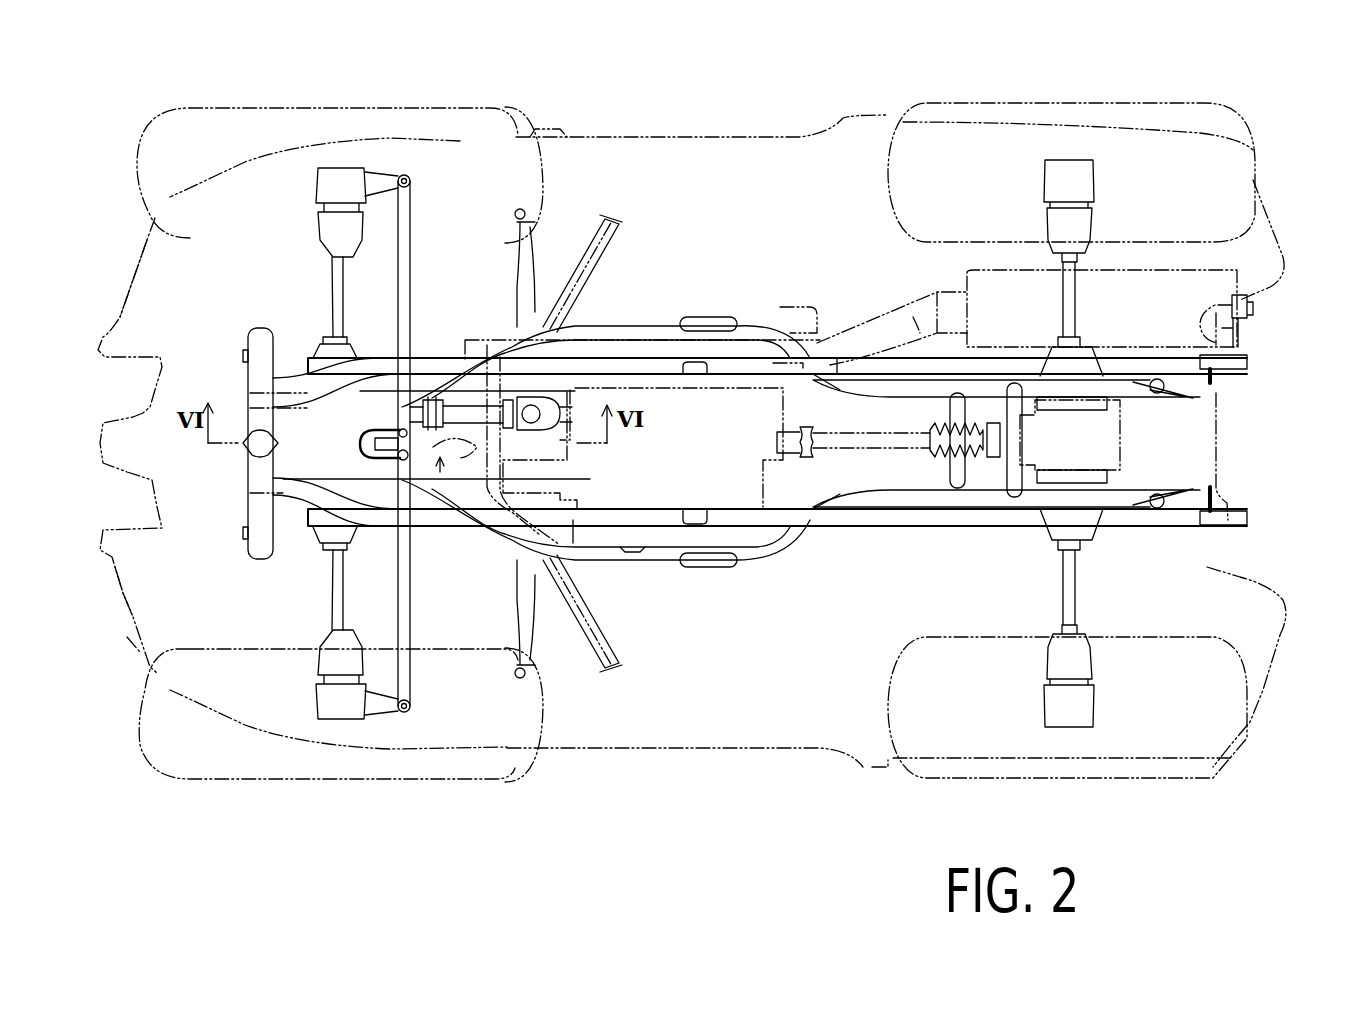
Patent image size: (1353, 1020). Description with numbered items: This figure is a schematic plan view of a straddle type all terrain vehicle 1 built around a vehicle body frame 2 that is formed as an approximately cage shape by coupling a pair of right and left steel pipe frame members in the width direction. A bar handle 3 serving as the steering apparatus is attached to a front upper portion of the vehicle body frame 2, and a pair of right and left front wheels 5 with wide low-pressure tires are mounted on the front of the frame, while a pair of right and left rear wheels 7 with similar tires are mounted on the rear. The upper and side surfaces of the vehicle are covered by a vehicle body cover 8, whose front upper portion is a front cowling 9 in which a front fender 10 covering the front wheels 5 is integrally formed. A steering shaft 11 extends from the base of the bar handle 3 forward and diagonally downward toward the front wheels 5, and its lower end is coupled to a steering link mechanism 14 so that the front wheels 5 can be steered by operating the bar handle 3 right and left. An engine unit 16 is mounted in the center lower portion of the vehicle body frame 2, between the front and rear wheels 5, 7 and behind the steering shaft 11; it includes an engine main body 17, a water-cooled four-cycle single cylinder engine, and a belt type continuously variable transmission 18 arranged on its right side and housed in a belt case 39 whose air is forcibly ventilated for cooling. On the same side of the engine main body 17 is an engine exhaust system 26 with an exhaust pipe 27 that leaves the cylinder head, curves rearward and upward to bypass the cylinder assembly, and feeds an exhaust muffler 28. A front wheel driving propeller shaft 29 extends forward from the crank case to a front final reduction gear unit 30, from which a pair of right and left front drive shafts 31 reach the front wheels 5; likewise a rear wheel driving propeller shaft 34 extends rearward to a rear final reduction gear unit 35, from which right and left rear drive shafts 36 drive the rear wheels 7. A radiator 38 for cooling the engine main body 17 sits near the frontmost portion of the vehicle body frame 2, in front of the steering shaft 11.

The all terrain vehicle 1 is at (706, 85).
The vehicle body frame 2 is at (866, 540).
The bar handle 3 is at (553, 325).
The front wheels 5 is at (135, 163).
The rear wheels 7 is at (980, 100).
The vehicle body cover 8 is at (115, 603).
The front cowling 9 is at (127, 637).
The front fender 10 is at (325, 165).
The steering shaft 11 is at (436, 530).
The steering link mechanism 14 is at (355, 458).
The engine unit 16 is at (633, 560).
The engine main body 17 is at (793, 545).
The belt type continuously variable transmission 18 is at (737, 320).
The engine exhaust system 26 is at (1250, 274).
The exhaust pipe 27 is at (427, 396).
The exhaust muffler 28 is at (1243, 330).
The front wheel driving propeller shaft 29 is at (448, 398).
The front final reduction gear unit 30 is at (148, 342).
The front drive shafts 31 is at (333, 285).
The rear wheel driving propeller shaft 34 is at (837, 358).
The rear final reduction gear unit 35 is at (1120, 441).
The rear drive shafts 36 is at (1223, 527).
The radiator 38 is at (247, 381).
The belt case 39 is at (618, 336).